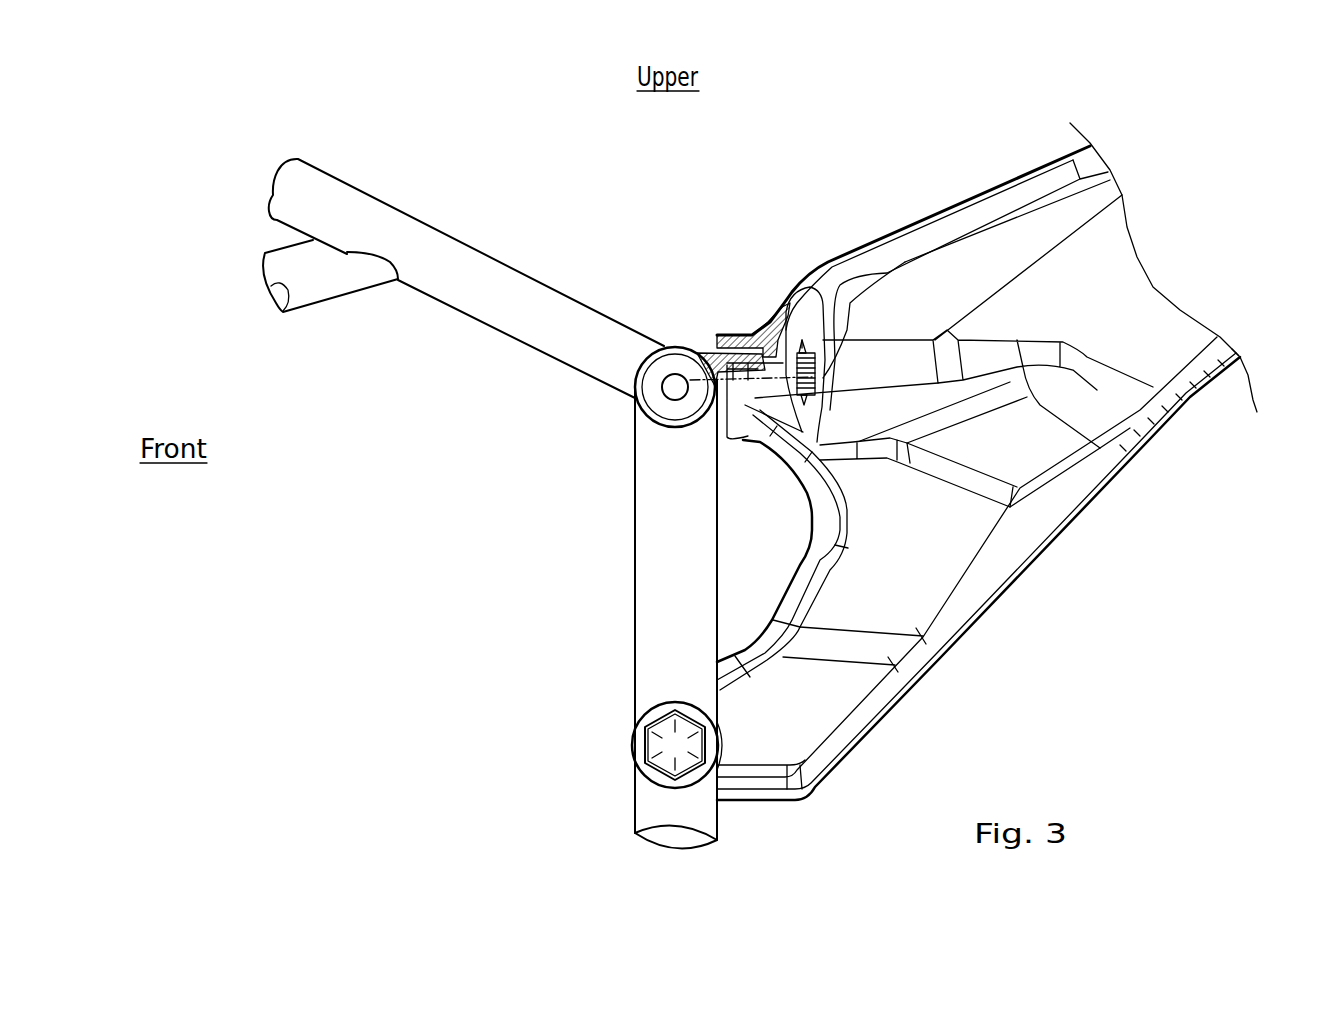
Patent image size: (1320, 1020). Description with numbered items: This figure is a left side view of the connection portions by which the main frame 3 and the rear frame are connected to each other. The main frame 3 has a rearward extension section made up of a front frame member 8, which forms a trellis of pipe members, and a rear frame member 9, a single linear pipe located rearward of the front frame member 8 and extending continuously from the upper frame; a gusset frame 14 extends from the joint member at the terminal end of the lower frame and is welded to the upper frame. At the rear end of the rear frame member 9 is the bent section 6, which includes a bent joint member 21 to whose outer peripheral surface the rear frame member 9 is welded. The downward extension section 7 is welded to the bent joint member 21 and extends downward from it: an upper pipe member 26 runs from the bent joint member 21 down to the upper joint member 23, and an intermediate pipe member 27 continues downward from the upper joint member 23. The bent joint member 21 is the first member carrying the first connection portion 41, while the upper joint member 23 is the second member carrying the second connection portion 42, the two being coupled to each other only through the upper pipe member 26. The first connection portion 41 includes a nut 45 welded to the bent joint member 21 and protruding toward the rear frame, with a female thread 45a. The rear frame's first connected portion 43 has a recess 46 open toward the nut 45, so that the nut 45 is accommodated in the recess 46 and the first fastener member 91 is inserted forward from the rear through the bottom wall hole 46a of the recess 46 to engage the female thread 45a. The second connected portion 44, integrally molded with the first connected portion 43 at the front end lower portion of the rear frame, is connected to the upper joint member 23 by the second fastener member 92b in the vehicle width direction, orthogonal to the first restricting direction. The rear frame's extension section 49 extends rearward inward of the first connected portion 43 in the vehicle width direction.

The main frame 3 is at (466, 233).
The front frame member 8 is at (466, 233).
The rear frame member 9 is at (513, 280).
The gusset frame 14 is at (324, 287).
The bent joint member 21 is at (644, 357).
The first connection portion 41 is at (593, 332).
The bent section 6 is at (593, 360).
The upper pipe member 26 is at (650, 538).
The intermediate pipe member 27 is at (650, 803).
The downward extension section 7 is at (624, 634).
The upper joint member 23 is at (614, 723).
The second fastener member 92b is at (652, 745).
The second connection portion 42 is at (580, 728).
The nut 45 is at (712, 340).
The female thread 45a is at (749, 424).
The recess 46 is at (737, 334).
The bottom wall hole 46a is at (777, 318).
The first fastener member 91 is at (800, 342).
The extension section 49 is at (937, 293).
The first connected portion 43 is at (748, 436).
The second connected portion 44 is at (978, 617).